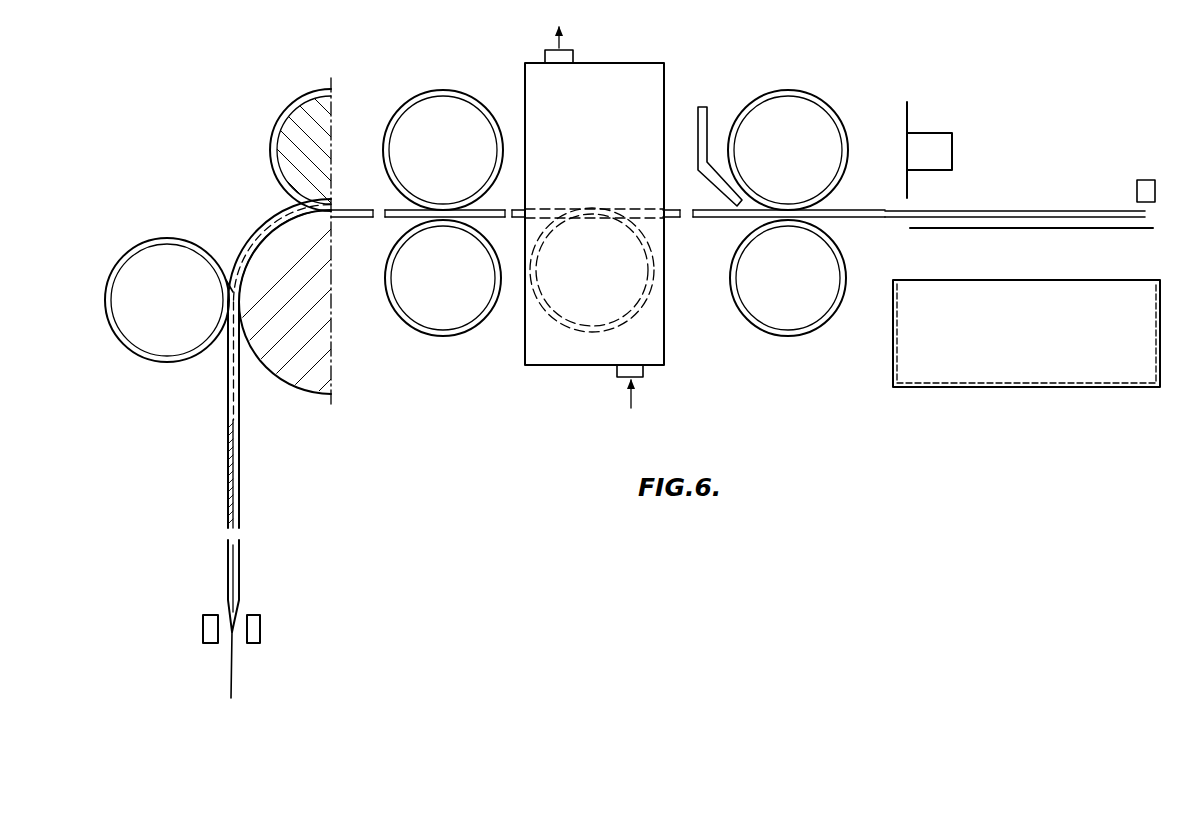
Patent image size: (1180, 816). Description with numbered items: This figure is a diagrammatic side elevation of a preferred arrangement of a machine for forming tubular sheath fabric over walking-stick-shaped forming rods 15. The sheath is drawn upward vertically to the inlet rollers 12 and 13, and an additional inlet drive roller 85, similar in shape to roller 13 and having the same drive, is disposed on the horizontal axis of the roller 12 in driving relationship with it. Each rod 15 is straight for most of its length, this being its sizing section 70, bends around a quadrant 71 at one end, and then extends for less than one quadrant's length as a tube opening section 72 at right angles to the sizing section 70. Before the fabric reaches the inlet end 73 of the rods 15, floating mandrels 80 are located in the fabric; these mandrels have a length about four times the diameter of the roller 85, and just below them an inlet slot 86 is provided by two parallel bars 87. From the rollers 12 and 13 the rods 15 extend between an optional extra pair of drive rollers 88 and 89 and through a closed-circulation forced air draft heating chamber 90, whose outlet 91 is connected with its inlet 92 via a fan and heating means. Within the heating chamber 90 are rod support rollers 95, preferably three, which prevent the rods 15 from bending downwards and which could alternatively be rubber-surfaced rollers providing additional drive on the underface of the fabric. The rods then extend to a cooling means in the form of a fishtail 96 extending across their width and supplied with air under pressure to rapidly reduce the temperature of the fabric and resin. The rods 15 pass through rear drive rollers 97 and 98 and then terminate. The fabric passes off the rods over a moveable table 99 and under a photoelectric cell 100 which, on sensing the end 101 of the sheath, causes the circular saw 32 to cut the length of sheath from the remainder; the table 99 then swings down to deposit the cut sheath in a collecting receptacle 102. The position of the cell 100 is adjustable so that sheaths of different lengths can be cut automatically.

The inlet roller 12 is at (290, 345).
The inlet roller 13 is at (298, 152).
The forming rods 15 is at (228, 284).
The reciprocating circular saw 32 is at (912, 118).
The sizing section 70 is at (356, 208).
The quadrant 71 is at (258, 238).
The tube opening section 72 is at (232, 374).
The inlet end 73 is at (229, 430).
The floating mandrels 80 is at (240, 508).
The additional inlet drive roller 85 is at (157, 330).
The inlet slot 86 is at (234, 630).
The parallel bars 87 is at (205, 628).
The drive roller 88 is at (432, 316).
The drive roller 89 is at (458, 70).
The heating chamber 90 is at (643, 62).
The outlet 91 is at (575, 58).
The inlet 92 is at (617, 372).
The rod support rollers 95 is at (590, 326).
The fishtail 96 is at (720, 190).
The rear drive roller 97 is at (822, 112).
The rear drive roller 98 is at (776, 316).
The moveable table 99 is at (1072, 232).
The photoelectric cell 100 is at (1160, 162).
The end 101 is at (1133, 230).
The collecting receptacle 102 is at (995, 388).